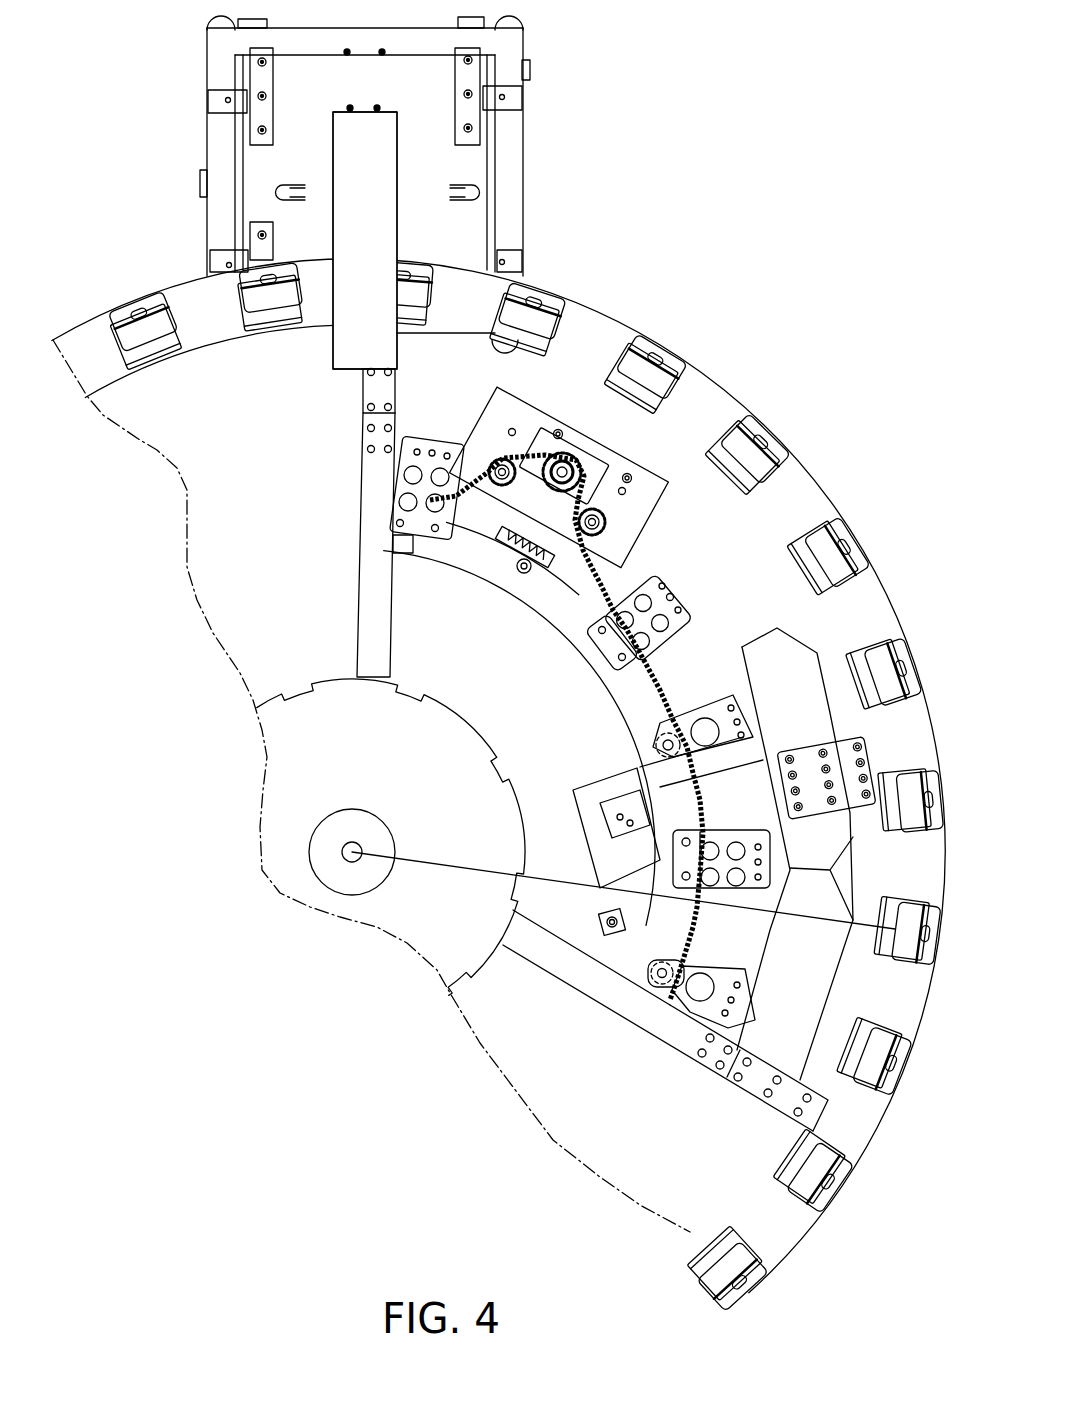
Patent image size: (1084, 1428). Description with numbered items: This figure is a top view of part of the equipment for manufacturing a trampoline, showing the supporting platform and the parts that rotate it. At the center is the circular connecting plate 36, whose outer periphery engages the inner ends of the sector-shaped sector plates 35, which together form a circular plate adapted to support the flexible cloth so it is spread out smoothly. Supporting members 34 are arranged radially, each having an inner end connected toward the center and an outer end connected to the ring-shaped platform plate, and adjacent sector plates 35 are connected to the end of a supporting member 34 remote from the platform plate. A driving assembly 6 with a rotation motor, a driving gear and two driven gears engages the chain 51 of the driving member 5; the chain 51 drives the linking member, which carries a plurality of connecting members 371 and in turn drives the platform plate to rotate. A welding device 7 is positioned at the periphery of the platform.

The welding device 7 is at (542, 119).
The driving assembly 6 is at (570, 412).
The connecting members 371 is at (673, 596).
The chain 51 is at (700, 598).
The driving member 5 is at (664, 670).
The connecting plate 36 is at (410, 925).
The sector plates 35 is at (493, 1010).
The supporting members 34 is at (687, 1027).